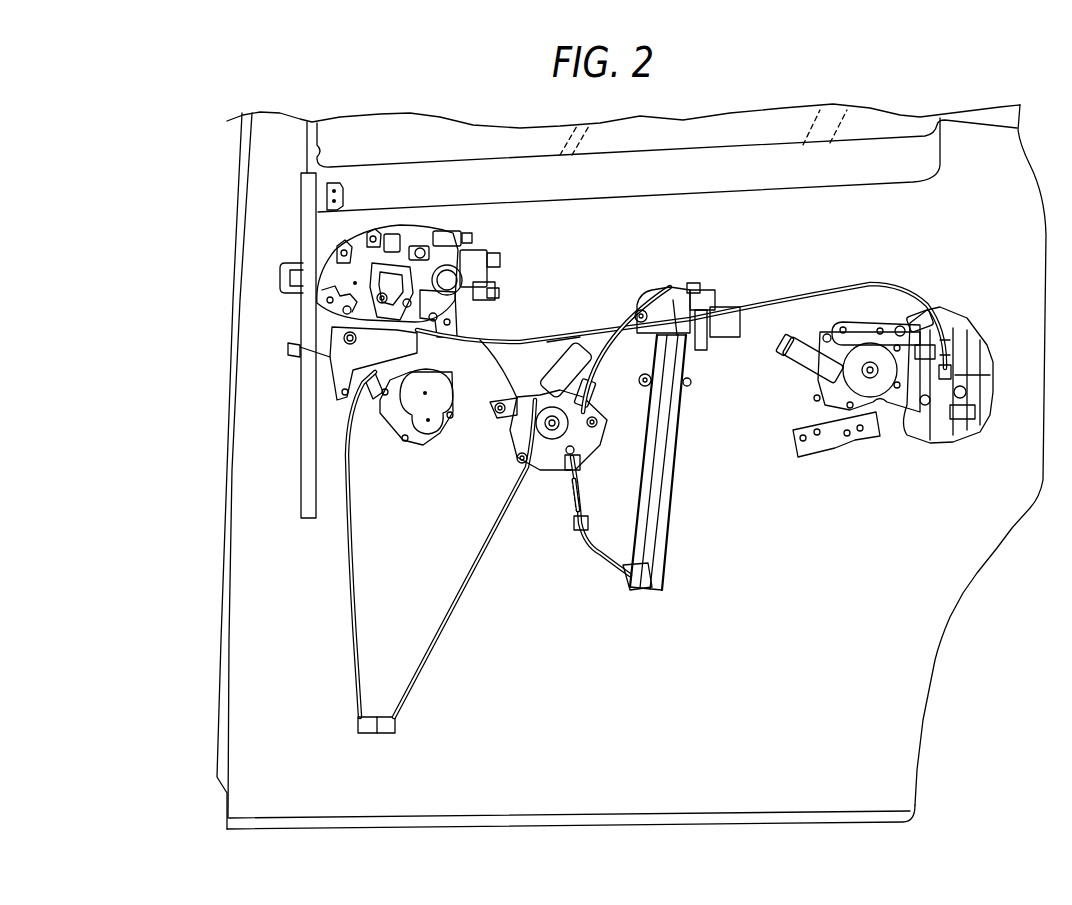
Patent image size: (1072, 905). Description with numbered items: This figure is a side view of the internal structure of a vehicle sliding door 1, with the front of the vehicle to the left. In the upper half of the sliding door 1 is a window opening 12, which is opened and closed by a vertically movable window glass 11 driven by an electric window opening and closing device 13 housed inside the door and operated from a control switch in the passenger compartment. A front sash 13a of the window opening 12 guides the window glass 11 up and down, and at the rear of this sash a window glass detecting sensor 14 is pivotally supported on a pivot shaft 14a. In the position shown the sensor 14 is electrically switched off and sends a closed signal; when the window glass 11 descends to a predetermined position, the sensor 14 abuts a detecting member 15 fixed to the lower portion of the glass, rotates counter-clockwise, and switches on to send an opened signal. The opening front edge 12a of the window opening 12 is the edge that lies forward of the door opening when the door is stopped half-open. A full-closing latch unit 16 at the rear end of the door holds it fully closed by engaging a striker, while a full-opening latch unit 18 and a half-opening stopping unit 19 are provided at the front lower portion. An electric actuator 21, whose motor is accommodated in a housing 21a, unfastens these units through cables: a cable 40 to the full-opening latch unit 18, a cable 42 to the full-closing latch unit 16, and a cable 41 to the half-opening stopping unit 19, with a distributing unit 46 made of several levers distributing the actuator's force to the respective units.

The sliding door 1 is at (232, 238).
The window glass 11 is at (340, 140).
The window opening 12 is at (1017, 128).
The opening front edge 12a is at (315, 149).
The electric window opening and closing device 13 is at (686, 511).
The front sash 13a is at (300, 248).
The window glass detecting sensor 14 is at (290, 360).
The pivot shaft 14a is at (332, 326).
The detecting member 15 is at (327, 197).
The full-closing latch unit 16 is at (975, 313).
The full-opening latch unit 18 is at (392, 742).
The half-opening stopping unit 19 is at (368, 742).
The electric actuator 21 is at (450, 430).
The housing 21a is at (450, 405).
The cable 40 is at (520, 347).
The cable 41 is at (355, 510).
The cable 42 is at (597, 333).
The distributing unit 46 is at (384, 227).